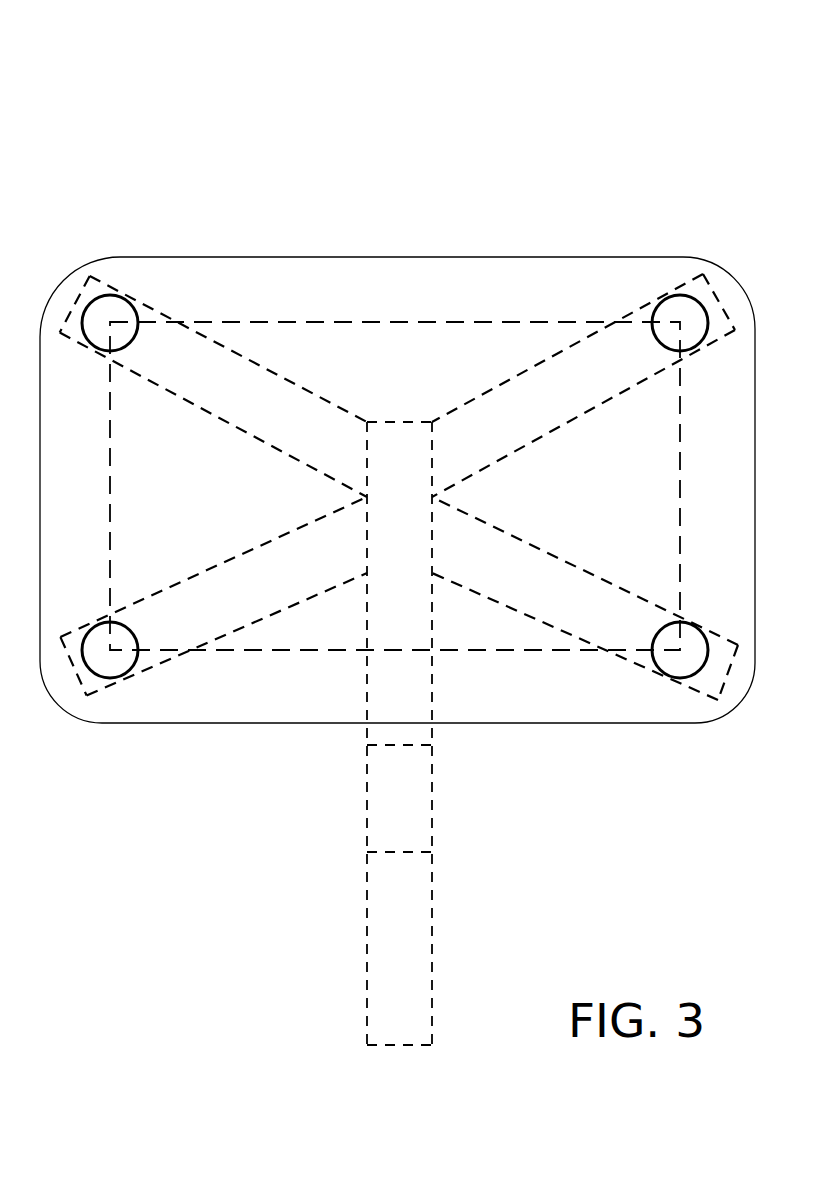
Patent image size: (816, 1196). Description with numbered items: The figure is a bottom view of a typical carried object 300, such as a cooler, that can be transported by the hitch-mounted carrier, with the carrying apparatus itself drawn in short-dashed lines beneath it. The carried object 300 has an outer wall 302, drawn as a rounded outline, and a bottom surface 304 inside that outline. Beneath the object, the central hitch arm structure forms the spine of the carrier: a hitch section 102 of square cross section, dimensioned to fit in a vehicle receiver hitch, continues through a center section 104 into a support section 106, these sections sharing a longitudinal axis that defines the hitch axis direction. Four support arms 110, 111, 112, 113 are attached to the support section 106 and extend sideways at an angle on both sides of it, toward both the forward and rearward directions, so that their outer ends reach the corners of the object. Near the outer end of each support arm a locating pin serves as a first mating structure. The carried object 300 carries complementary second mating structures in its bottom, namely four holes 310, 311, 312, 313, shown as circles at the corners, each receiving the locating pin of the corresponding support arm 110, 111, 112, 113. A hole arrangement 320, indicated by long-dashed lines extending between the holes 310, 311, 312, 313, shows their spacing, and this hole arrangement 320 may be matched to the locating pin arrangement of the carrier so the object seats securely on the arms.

The carried object 300 is at (187, 83).
The outer wall 302 is at (555, 257).
The bottom surface 304 is at (460, 357).
The hole arrangement 320 is at (327, 322).
The hitch section 102 is at (703, 277).
The center section 104 is at (395, 830).
The support section 106 is at (402, 608).
The support arm 110 is at (542, 568).
The support arm 111 is at (517, 430).
The support arm 112 is at (273, 408).
The support arm 113 is at (278, 560).
The hole 310 is at (682, 663).
The hole 311 is at (678, 295).
The hole 312 is at (98, 307).
The hole 313 is at (120, 663).